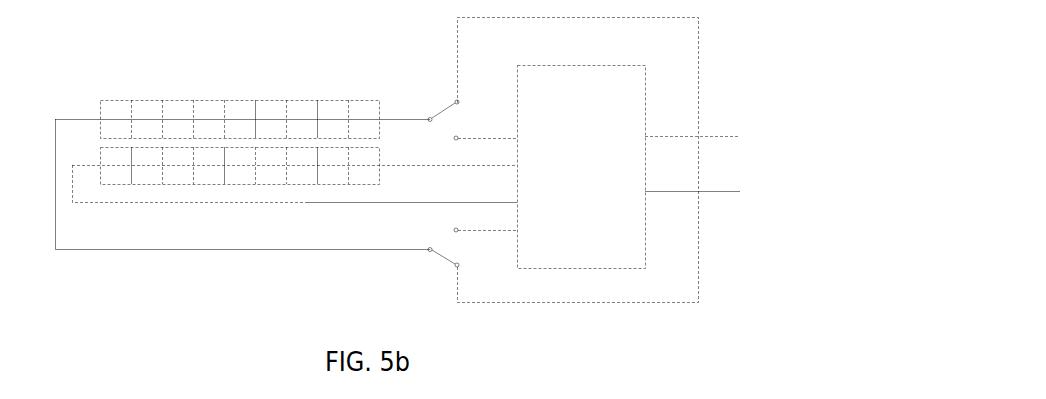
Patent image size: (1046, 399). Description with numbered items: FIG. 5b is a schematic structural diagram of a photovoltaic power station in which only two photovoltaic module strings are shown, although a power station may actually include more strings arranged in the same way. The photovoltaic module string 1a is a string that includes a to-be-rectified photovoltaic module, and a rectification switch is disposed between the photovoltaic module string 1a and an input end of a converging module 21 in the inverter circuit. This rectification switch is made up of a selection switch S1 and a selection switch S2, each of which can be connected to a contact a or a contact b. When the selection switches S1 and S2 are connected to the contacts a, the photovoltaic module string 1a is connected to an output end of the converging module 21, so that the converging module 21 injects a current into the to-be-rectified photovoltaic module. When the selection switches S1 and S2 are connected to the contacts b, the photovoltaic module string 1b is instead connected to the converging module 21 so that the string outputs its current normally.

The photovoltaic module string 1a is at (380, 100).
The photovoltaic module string 1b is at (379, 175).
The converging module 21 is at (573, 65).
The selection switch S1 is at (463, 113).
The selection switch S2 is at (458, 252).